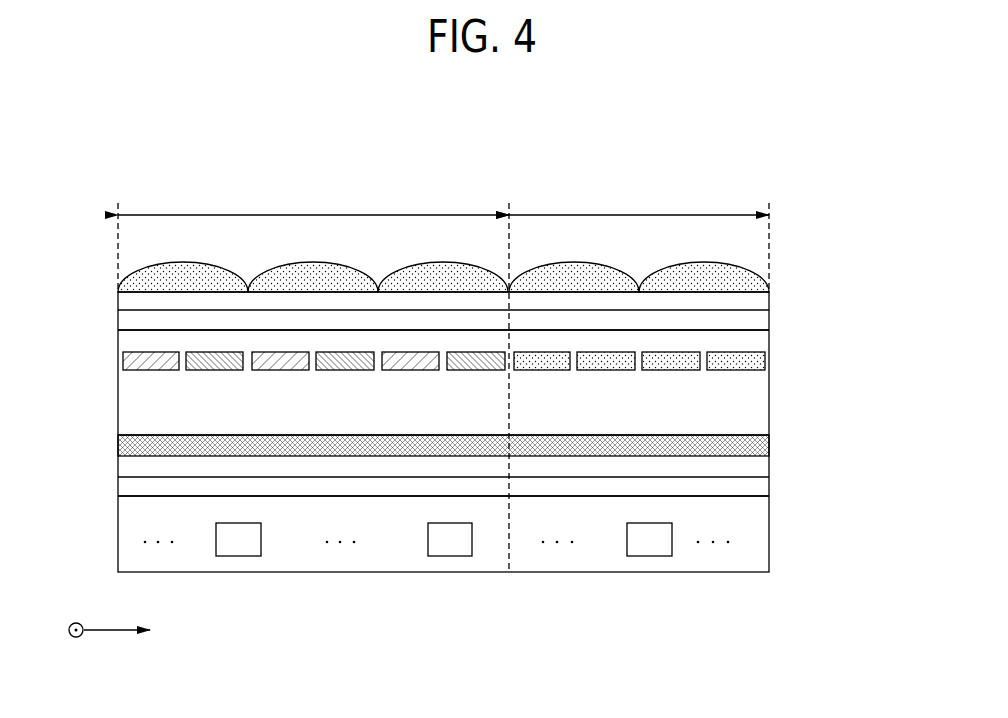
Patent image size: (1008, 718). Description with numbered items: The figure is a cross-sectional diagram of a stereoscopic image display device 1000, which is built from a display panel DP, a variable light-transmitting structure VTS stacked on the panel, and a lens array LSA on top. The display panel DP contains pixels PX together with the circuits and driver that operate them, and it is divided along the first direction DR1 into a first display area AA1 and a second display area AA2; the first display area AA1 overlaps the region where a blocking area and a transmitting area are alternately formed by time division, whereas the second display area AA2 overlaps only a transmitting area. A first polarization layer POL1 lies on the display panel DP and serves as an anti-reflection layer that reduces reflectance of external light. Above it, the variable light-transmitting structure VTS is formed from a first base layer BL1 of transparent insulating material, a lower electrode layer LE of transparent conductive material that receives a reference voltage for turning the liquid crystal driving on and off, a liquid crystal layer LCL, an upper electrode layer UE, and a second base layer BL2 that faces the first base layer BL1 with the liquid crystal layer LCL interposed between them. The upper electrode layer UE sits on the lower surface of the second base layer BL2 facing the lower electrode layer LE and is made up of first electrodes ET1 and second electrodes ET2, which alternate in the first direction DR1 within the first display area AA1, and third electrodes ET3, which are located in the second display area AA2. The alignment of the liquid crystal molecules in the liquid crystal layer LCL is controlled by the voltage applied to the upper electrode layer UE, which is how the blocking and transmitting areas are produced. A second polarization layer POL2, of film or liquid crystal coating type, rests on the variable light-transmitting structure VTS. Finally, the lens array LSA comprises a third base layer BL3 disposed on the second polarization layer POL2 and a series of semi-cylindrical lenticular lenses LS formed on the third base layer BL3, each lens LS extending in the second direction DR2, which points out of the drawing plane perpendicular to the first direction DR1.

The stereoscopic image display device 1000 is at (522, 166).
The first display area AA1 is at (313, 200).
The second display area AA2 is at (639, 200).
The lens LS is at (764, 271).
The third base layer BL3 is at (762, 300).
The lens array LSA is at (499, 288).
The second polarization layer POL2 is at (128, 322).
The second base layer BL2 is at (762, 340).
The first electrodes ET1 is at (125, 358).
The second electrodes ET2 is at (200, 364).
The third electrodes ET3 is at (551, 371).
The liquid crystal layer LCL is at (762, 396).
The variable light-transmitting structure VTS is at (465, 406).
The lower electrode layer LE is at (762, 445).
The first base layer BL1 is at (476, 469).
The first polarization layer POL1 is at (128, 486).
The display panel DP is at (473, 526).
The pixels PX is at (444, 539).
The upper electrode layer UE is at (608, 678).
The first direction DR1 is at (134, 630).
The second direction DR2 is at (76, 616).